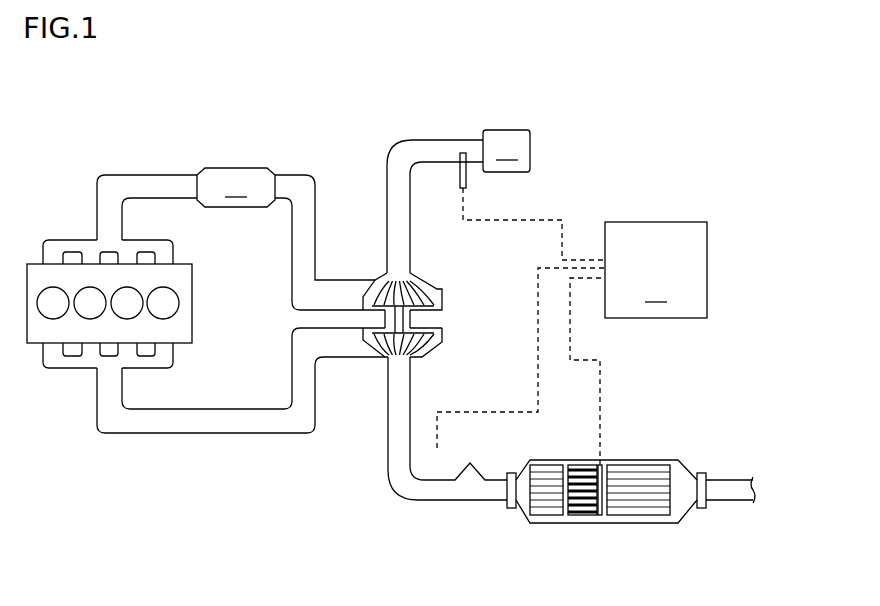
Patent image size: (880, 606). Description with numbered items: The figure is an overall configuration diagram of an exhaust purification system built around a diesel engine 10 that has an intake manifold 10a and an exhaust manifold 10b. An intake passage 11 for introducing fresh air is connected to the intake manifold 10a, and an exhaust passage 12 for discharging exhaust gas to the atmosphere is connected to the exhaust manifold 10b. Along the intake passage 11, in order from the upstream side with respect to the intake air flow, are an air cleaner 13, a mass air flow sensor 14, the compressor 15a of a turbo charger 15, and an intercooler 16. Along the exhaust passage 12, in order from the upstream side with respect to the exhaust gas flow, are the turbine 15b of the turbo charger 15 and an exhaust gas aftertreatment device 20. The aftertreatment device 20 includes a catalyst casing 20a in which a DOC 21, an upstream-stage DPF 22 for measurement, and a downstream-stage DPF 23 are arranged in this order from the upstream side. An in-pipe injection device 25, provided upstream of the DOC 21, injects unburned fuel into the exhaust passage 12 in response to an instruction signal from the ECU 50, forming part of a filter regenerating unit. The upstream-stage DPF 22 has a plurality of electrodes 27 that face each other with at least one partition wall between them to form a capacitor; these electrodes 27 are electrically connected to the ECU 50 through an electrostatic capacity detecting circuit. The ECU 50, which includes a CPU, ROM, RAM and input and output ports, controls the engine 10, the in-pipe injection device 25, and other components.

The diesel engine 10 is at (208, 309).
The intake manifold 10a is at (70, 240).
The exhaust manifold 10b is at (70, 368).
The intake passage 11 is at (284, 172).
The exhaust passage 12 is at (268, 435).
The air cleaner 13 is at (506, 151).
The mass air flow (MAF) sensor 14 is at (456, 180).
The turbo charger 15 is at (438, 319).
The compressor 15a is at (428, 289).
The turbine 15b is at (414, 352).
The intercooler 16 is at (236, 187).
The exhaust gas aftertreatment device 20 is at (631, 437).
The catalyst casing 20a is at (662, 460).
The DOC 21 is at (540, 515).
The upstream-stage DPF 22 is at (580, 515).
The downstream-stage DPF 23 is at (652, 515).
The in-pipe injection device 25 is at (461, 452).
The electrodes 27 is at (602, 465).
The electronic control unit (ECU) 50 is at (656, 270).